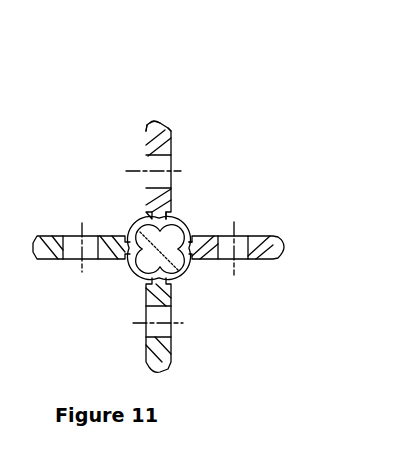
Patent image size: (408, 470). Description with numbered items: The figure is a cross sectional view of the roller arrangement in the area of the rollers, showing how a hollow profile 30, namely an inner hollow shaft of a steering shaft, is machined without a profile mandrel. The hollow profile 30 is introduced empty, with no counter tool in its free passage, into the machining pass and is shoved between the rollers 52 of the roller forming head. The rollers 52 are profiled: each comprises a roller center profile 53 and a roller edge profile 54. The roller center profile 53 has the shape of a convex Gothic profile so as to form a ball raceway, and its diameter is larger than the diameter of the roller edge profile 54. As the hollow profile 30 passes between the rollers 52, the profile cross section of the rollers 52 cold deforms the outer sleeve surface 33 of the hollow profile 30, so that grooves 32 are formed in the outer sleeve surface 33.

The hollow profile 30 is at (113, 277).
The grooves 32 is at (132, 237).
The outer sleeve surface 33 is at (140, 217).
The rollers 52 is at (207, 158).
The roller center profile 53 is at (154, 121).
The roller edge profile 54 is at (149, 125).